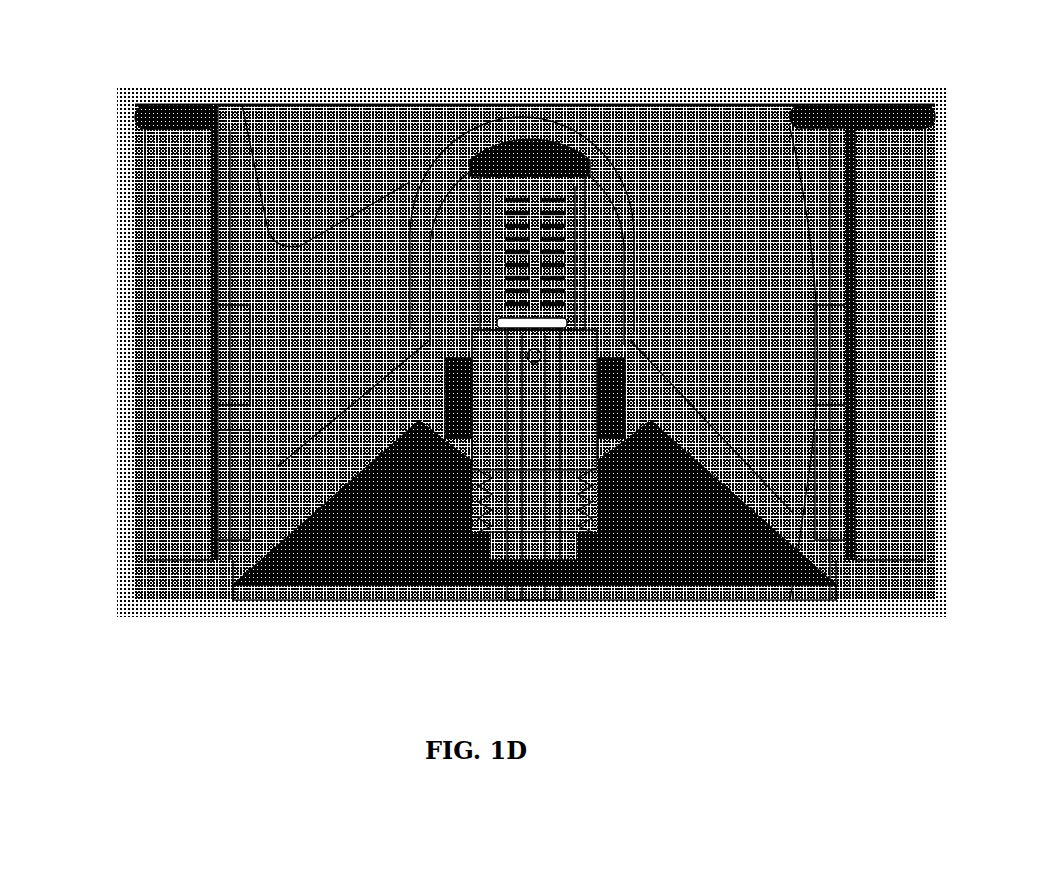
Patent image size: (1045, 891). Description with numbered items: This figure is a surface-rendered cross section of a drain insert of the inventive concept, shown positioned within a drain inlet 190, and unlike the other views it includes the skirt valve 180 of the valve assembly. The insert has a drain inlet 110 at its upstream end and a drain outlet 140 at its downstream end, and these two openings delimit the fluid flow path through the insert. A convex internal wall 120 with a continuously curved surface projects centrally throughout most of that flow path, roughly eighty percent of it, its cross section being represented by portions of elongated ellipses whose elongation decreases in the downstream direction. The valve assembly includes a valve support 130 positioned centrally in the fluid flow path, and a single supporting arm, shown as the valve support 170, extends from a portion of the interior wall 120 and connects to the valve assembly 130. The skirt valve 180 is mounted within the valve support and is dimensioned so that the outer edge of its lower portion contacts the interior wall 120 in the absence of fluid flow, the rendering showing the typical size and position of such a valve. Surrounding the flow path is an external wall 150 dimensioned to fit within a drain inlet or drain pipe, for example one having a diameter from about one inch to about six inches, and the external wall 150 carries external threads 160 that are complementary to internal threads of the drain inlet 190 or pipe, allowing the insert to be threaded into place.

The drain inlet 110 is at (712, 107).
The convex internal wall 120 is at (257, 123).
The valve support 130 is at (523, 115).
The drain outlet 140 is at (333, 603).
The external wall 150 is at (212, 307).
The external threads 160 is at (213, 223).
The valve support 170 is at (358, 205).
The skirt valve 180 is at (627, 592).
The drain inlet 190 is at (212, 427).